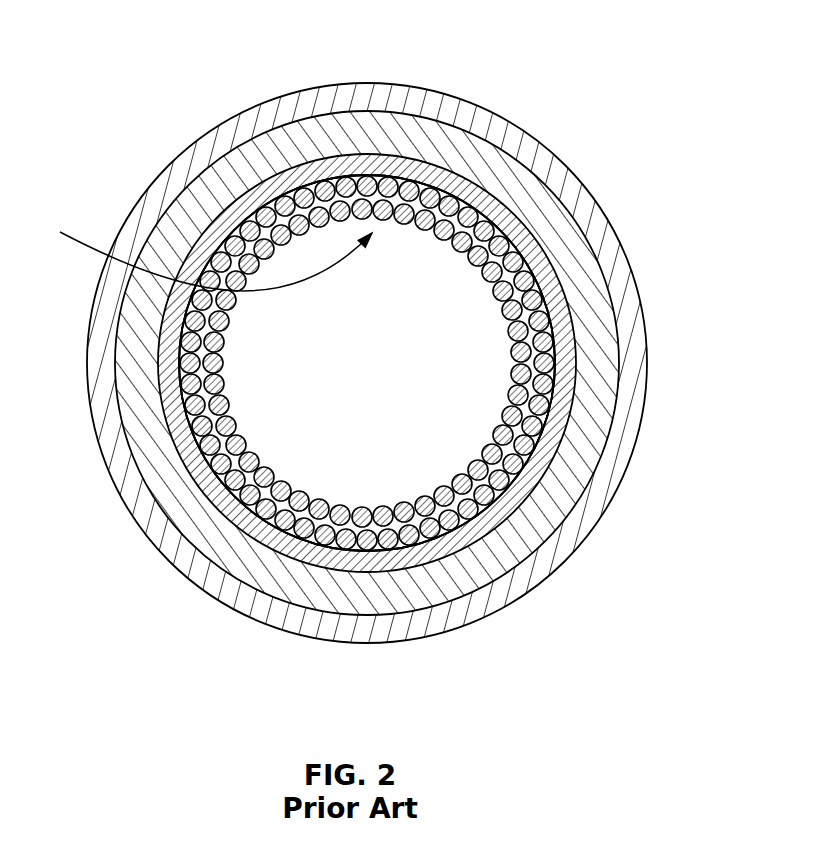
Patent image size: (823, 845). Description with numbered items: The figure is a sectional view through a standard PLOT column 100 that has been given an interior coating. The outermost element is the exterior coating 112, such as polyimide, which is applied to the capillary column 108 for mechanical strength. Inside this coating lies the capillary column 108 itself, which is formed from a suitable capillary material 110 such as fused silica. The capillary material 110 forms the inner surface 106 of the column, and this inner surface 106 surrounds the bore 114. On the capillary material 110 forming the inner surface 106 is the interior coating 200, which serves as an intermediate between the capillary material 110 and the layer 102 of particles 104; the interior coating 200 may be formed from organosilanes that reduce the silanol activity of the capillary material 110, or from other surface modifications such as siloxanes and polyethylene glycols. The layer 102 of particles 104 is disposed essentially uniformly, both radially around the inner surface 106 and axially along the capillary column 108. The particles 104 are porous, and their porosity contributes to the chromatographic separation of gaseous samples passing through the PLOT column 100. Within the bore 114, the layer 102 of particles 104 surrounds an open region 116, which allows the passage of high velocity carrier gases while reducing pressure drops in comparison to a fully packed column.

The PLOT column 100 is at (392, 358).
The layer 102 is at (60, 232).
The particles 104 is at (430, 533).
The inner surface 106 is at (535, 292).
The capillary column 108 is at (90, 423).
The capillary material 110 is at (252, 555).
The exterior coating 112 is at (148, 518).
The bore 114 is at (465, 350).
The open region 116 is at (422, 350).
The interior coating 200 is at (533, 473).